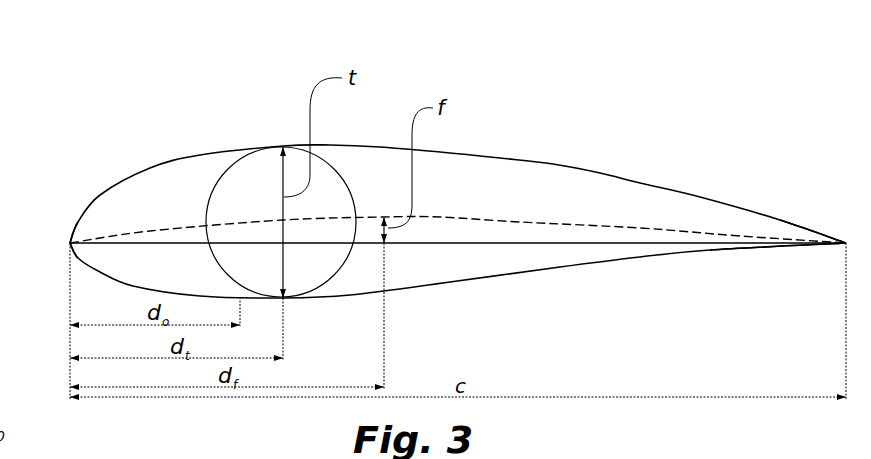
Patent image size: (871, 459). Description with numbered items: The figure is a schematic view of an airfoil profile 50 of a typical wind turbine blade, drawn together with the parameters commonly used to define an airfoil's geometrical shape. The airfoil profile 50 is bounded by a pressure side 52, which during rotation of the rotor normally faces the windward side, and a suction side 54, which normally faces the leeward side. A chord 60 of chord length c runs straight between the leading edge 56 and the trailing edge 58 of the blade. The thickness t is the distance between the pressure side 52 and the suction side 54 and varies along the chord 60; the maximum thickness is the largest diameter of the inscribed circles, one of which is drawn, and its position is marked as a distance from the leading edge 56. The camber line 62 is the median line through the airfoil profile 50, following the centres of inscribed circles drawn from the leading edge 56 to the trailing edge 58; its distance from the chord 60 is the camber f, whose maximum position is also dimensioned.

The airfoil profile 50 is at (458, 174).
The pressure side 52 is at (610, 270).
The suction side 54 is at (553, 164).
The leading edge 56 is at (70, 242).
The trailing edge 58 is at (846, 240).
The chord 60 is at (647, 240).
The camber line 62 is at (447, 216).